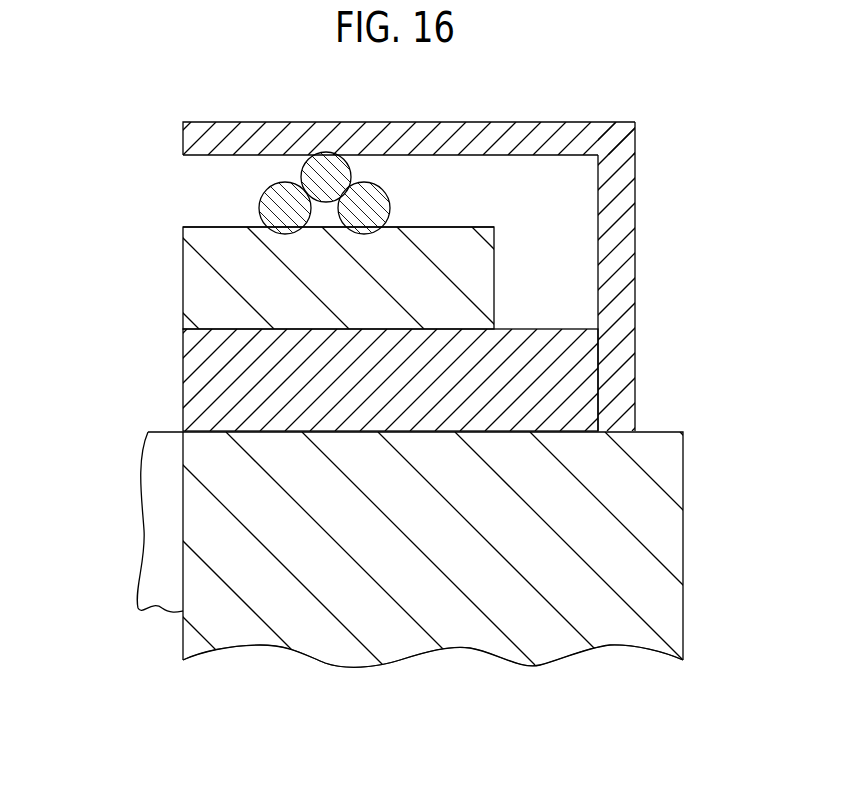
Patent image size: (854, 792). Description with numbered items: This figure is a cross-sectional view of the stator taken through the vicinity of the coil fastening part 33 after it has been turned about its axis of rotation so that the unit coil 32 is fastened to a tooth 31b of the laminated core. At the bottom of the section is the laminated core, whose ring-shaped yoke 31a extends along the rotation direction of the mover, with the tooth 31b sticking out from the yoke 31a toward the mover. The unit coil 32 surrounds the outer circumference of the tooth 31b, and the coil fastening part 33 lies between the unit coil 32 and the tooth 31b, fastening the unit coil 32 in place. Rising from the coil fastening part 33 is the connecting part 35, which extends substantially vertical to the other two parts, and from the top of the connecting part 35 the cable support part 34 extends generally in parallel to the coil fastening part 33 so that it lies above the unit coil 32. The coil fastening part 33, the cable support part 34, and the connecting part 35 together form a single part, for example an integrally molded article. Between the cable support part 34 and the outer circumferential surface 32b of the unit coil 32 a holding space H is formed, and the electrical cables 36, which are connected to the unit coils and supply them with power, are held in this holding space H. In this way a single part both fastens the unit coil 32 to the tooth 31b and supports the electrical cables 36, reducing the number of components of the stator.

The yoke 31a is at (158, 608).
The tooth 31b is at (312, 656).
The unit coil 32 is at (183, 289).
The outer circumferential surface of the unit coil 32b is at (207, 225).
The coil fastening part 33 is at (183, 367).
The cable support part 34 is at (505, 122).
The connecting part 35 is at (636, 268).
The electrical cables 36 is at (263, 178).
The holding space H is at (424, 203).